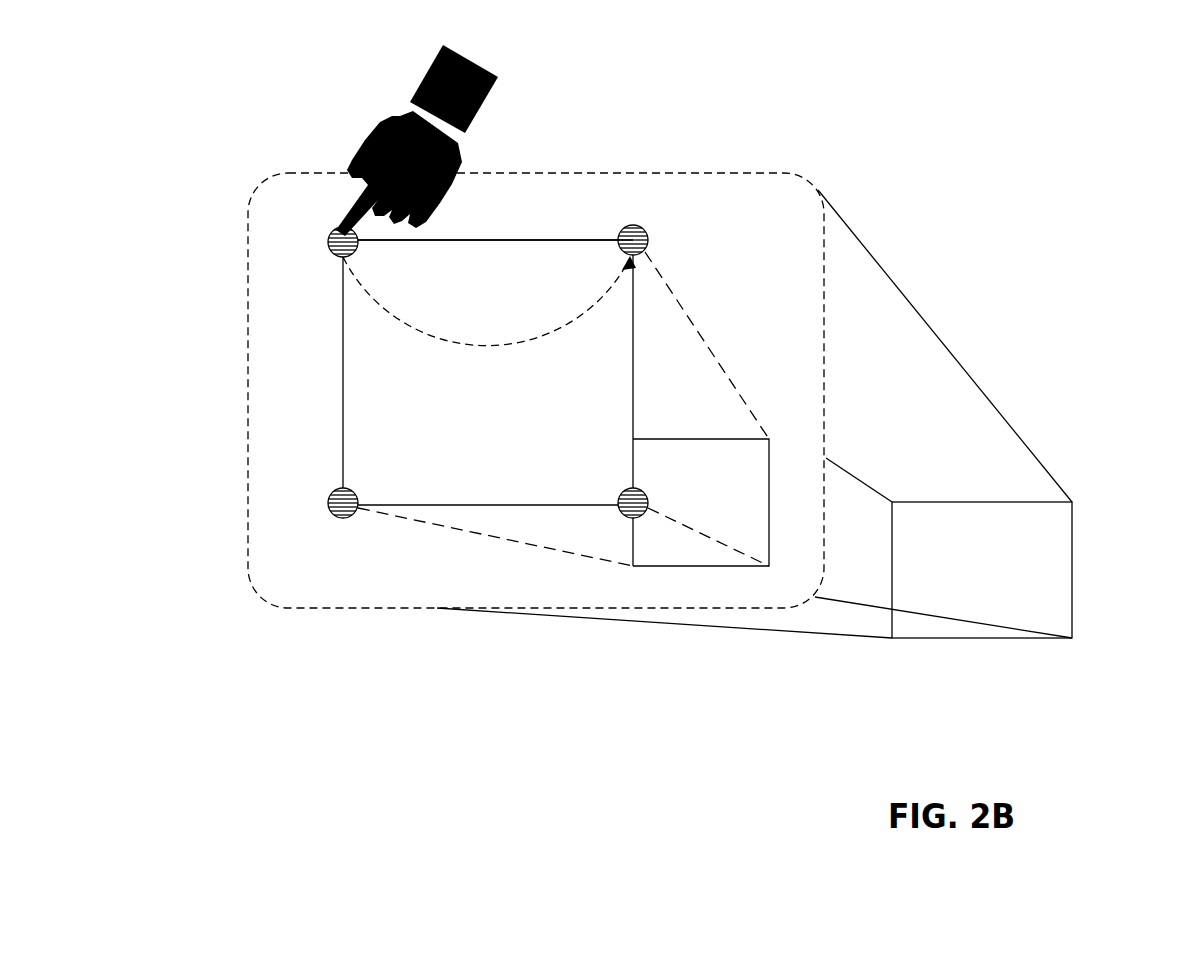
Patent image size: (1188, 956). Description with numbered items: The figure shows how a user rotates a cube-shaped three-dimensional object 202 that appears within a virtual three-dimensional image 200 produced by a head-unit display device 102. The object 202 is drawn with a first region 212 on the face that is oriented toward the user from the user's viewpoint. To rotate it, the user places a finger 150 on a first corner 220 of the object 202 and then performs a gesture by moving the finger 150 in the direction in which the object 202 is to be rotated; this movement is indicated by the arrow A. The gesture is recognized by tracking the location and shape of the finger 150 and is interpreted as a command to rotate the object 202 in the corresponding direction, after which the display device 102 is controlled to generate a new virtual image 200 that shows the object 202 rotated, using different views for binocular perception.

The display device 102 is at (1072, 522).
The finger 150 is at (328, 236).
The virtual 3D image 200 is at (770, 173).
The 3D object 202 is at (703, 267).
The first region 212 is at (513, 240).
The first corner 220 is at (332, 253).
The arrow A is at (388, 318).